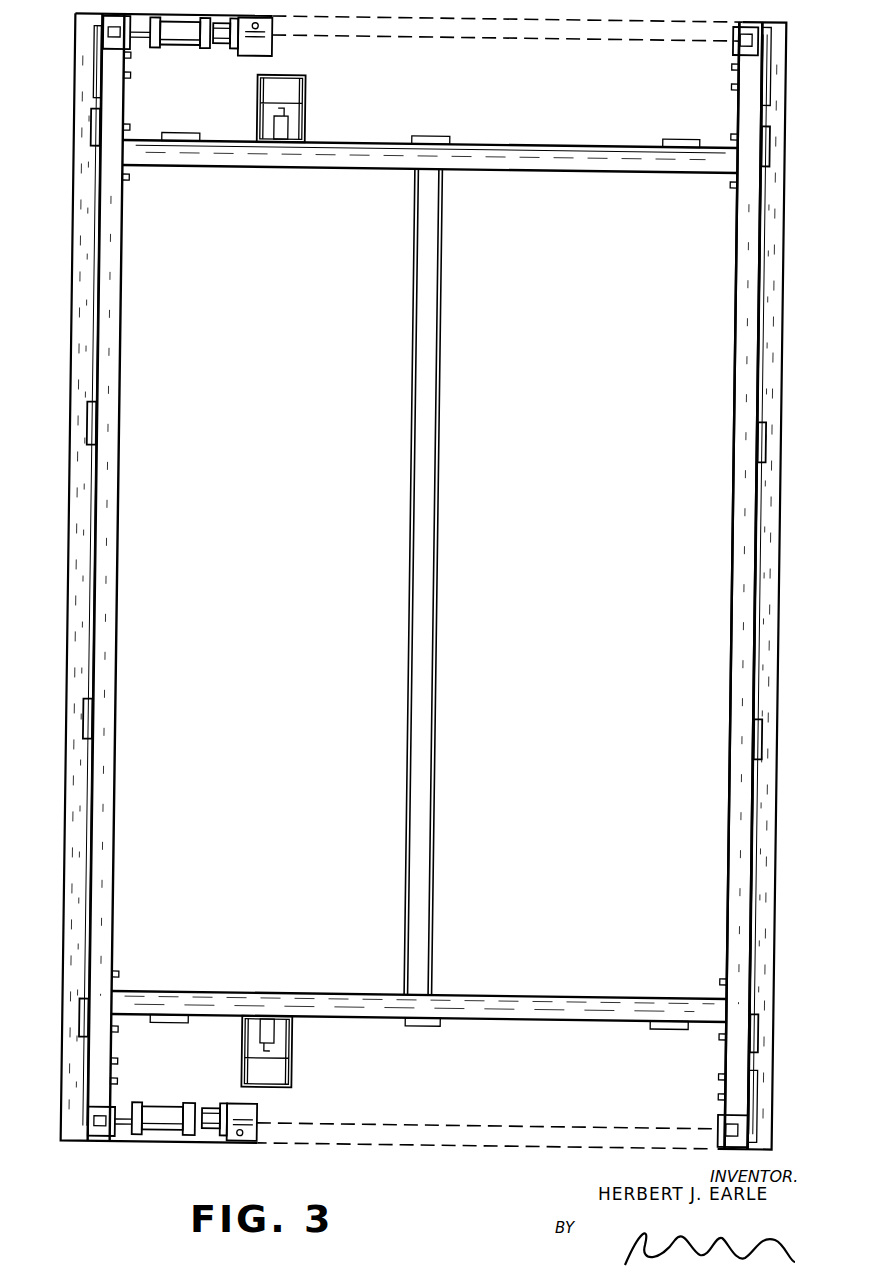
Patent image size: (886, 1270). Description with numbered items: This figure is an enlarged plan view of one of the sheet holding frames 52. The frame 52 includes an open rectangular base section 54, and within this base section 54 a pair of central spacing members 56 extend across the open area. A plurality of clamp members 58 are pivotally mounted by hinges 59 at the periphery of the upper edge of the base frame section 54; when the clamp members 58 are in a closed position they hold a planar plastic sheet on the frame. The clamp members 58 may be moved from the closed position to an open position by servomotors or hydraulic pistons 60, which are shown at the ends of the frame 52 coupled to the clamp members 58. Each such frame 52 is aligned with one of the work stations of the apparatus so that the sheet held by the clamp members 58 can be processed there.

The frame 52 is at (122, 288).
The base frame section 54 is at (742, 905).
The central spacing members 56 is at (435, 630).
The clamp members 58 is at (345, 166).
The hinges 59 is at (95, 133).
The hydraulic pistons 60 is at (265, 108).